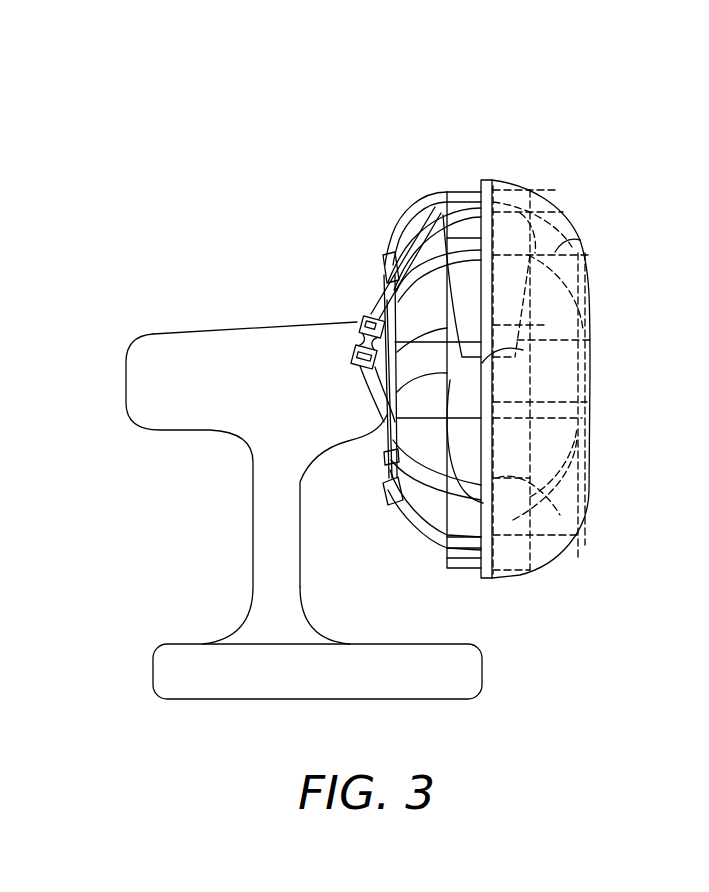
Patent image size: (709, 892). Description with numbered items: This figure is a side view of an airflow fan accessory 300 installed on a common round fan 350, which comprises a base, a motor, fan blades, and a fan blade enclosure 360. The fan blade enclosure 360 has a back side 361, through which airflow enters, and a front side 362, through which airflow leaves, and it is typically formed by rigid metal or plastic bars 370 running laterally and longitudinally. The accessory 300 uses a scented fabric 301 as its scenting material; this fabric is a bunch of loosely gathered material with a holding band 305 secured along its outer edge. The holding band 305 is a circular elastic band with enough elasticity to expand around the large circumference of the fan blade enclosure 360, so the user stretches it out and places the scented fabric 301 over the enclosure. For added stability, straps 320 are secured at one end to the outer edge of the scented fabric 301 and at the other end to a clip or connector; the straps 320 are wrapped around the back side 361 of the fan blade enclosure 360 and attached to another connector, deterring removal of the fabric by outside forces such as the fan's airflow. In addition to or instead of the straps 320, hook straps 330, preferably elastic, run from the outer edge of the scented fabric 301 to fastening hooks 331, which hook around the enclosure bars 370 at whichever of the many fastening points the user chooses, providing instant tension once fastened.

The airflow fan accessory 300 is at (539, 392).
The scented fabric 301 is at (578, 240).
The holding band 305 is at (523, 350).
The straps 320 is at (425, 215).
The hook straps 330 is at (408, 245).
The fastening hooks 331 is at (385, 265).
The round fan 350 is at (217, 563).
The fan blade enclosure 360 is at (404, 556).
The back side 361 is at (390, 458).
The front side 362 is at (583, 442).
The bars 370 is at (435, 243).